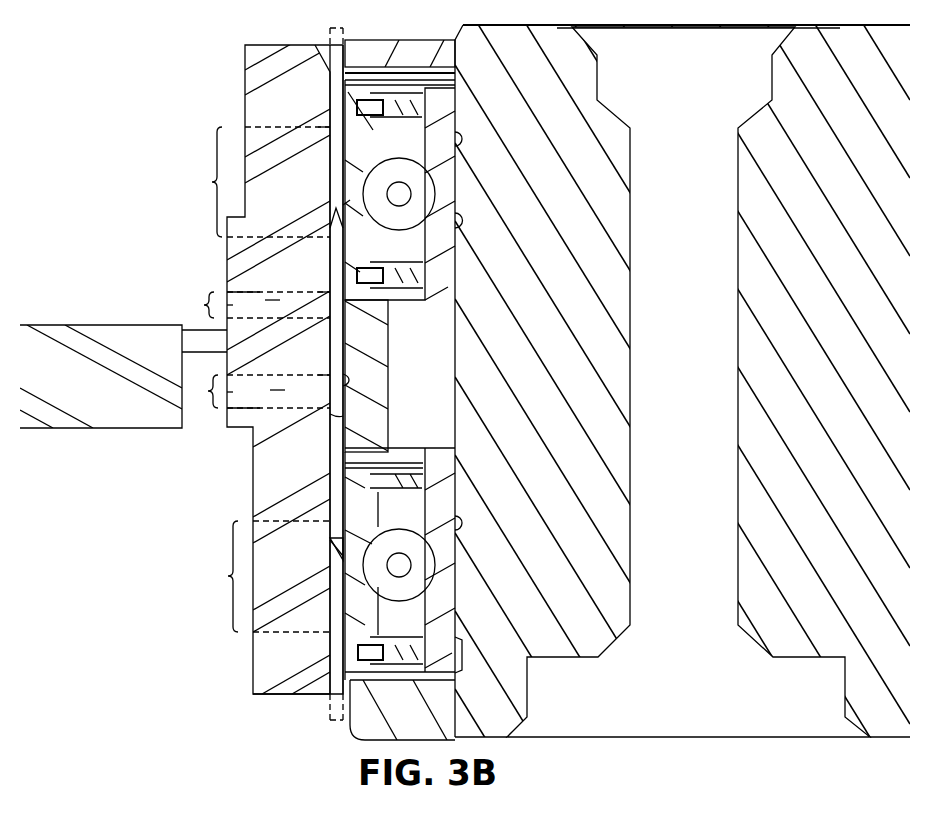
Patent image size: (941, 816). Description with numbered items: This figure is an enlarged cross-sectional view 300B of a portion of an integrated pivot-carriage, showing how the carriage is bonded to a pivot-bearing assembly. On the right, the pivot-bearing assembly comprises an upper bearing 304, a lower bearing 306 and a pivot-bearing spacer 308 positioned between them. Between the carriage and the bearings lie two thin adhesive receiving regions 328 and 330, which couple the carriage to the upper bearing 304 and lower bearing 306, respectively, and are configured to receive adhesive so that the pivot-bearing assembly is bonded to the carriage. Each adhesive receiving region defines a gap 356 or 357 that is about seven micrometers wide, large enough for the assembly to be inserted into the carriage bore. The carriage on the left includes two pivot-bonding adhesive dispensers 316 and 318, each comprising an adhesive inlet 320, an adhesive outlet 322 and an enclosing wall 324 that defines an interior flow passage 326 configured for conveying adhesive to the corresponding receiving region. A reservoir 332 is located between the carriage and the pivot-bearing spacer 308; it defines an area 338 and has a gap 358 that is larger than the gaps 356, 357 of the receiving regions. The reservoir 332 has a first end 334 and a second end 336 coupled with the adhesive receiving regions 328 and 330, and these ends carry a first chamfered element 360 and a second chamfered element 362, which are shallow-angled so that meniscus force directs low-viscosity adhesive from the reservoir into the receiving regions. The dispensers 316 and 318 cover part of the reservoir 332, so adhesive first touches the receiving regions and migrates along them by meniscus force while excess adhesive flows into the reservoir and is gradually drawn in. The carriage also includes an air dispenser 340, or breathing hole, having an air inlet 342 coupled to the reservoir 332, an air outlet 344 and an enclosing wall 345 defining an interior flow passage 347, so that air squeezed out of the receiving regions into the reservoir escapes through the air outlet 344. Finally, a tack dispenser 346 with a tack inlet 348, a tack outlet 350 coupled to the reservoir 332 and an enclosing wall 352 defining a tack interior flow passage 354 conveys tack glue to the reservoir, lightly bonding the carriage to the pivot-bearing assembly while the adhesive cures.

The integrated pivot-carriage 300B is at (465, 408).
The upper bearing 304 is at (400, 190).
The lower bearing 306 is at (400, 564).
The pivot-bearing spacer 308 is at (366, 376).
The pivot-bonding adhesive dispenser 316 is at (253, 182).
The pivot-bonding adhesive dispenser 318 is at (261, 576).
The adhesive inlet 320 is at (271, 358).
The adhesive outlet 322 is at (330, 140).
The enclosing wall 324 is at (292, 230).
The interior flow passage 326 is at (222, 110).
The adhesive receiving region 328 is at (343, 93).
The adhesive receiving region 330 is at (340, 638).
The reservoir 332 is at (345, 380).
The first end 334 is at (333, 225).
The second end 336 is at (334, 541).
The area 338 is at (334, 526).
The air dispenser 340 is at (250, 305).
The air inlet 342 is at (329, 302).
The air outlet 344 is at (222, 300).
The enclosing wall 345 is at (268, 298).
The tack dispenser 346 is at (255, 391).
The interior flow passage 347 is at (244, 305).
The tack inlet 348 is at (227, 408).
The tack outlet 350 is at (329, 386).
The enclosing wall 352 is at (281, 386).
The tack interior flow passage 354 is at (244, 394).
The gap 356 is at (330, 28).
The gap 357 is at (330, 720).
The gap 358 is at (345, 420).
The first chamfered element 360 is at (341, 208).
The second chamfered element 362 is at (333, 544).